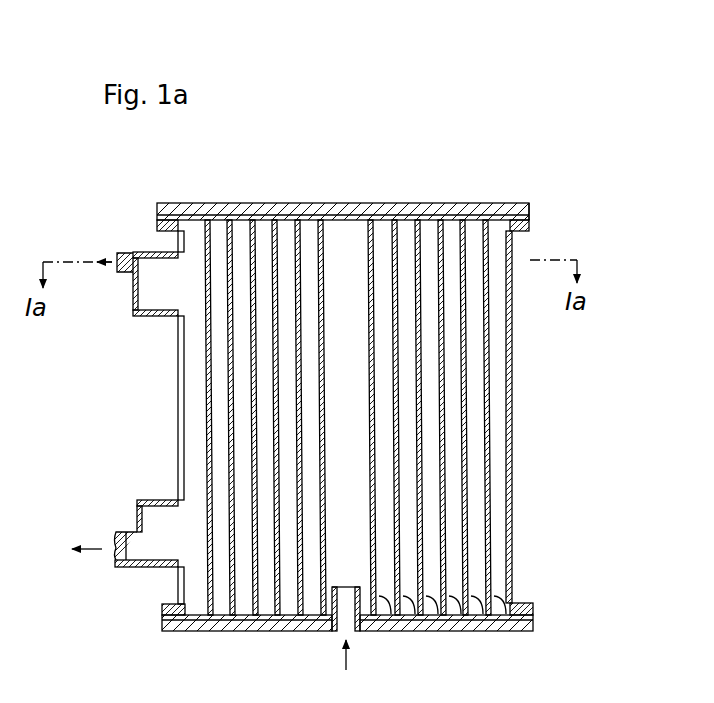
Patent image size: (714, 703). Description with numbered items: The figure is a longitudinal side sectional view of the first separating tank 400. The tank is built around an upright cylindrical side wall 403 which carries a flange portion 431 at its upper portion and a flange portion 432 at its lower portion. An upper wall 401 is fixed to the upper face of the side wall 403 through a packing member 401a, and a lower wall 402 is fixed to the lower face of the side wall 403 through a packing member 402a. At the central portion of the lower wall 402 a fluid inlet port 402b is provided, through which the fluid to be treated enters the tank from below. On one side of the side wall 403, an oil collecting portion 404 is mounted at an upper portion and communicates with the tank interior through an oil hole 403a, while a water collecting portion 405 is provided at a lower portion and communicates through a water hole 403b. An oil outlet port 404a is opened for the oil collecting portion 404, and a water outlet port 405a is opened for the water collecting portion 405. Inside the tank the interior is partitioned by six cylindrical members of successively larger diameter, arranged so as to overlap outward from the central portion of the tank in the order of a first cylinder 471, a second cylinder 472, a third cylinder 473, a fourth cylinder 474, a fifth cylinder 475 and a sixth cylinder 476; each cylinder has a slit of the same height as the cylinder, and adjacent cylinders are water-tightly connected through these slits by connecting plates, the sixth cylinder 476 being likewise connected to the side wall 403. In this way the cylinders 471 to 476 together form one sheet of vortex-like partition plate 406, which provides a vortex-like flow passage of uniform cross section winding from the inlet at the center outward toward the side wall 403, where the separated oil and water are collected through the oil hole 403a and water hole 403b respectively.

The first separating tank 400 is at (515, 386).
The upper wall 401 is at (413, 203).
The packing member 401a is at (530, 216).
The flange portion 431 is at (530, 225).
The side wall 403 is at (510, 454).
The oil hole 403a is at (152, 365).
The water hole 403b is at (190, 505).
The oil collecting portion 404 is at (150, 318).
The oil outlet port 404a is at (145, 254).
The water collecting portion 405 is at (152, 499).
The water outlet port 405a is at (142, 548).
The lower wall 402 is at (162, 631).
The packing member 402a is at (162, 621).
The fluid inlet port 402b is at (347, 590).
The flange portion 432 is at (528, 603).
The vortex-like partition plate 406 is at (492, 508).
The first cylinder 471 is at (391, 614).
The second cylinder 472 is at (415, 614).
The third cylinder 473 is at (438, 614).
The fourth cylinder 474 is at (461, 614).
The fifth cylinder 475 is at (483, 614).
The sixth cylinder 476 is at (506, 614).